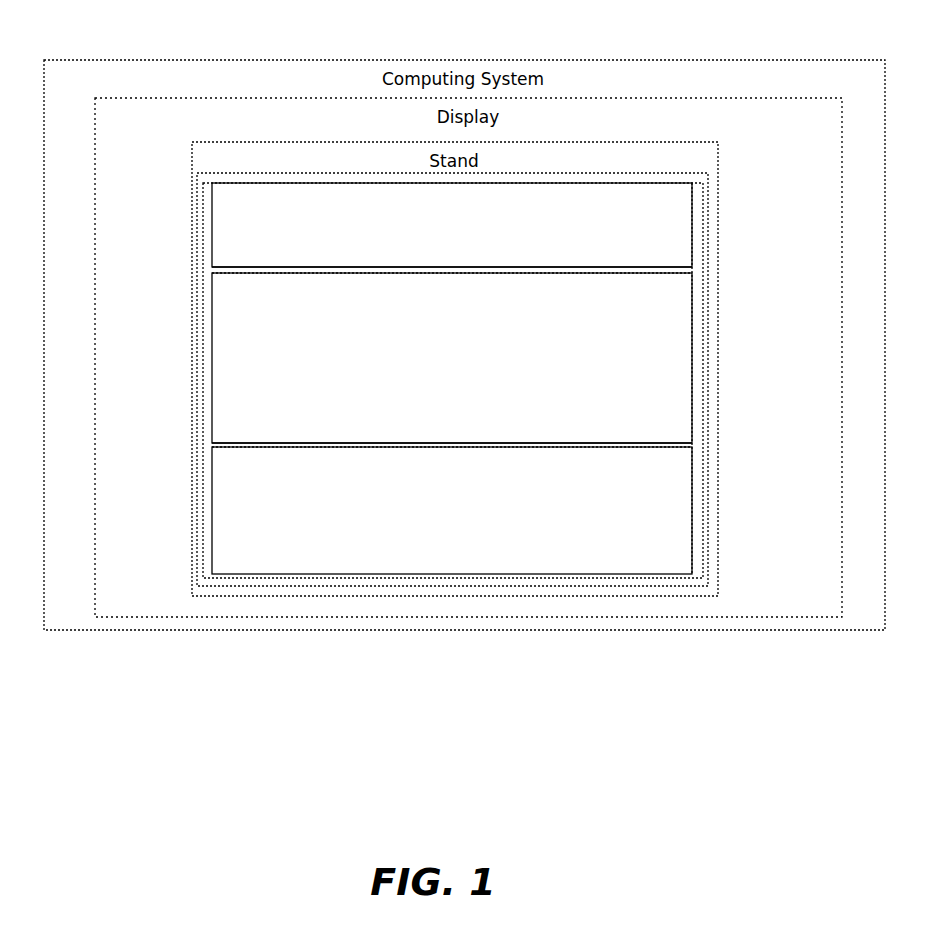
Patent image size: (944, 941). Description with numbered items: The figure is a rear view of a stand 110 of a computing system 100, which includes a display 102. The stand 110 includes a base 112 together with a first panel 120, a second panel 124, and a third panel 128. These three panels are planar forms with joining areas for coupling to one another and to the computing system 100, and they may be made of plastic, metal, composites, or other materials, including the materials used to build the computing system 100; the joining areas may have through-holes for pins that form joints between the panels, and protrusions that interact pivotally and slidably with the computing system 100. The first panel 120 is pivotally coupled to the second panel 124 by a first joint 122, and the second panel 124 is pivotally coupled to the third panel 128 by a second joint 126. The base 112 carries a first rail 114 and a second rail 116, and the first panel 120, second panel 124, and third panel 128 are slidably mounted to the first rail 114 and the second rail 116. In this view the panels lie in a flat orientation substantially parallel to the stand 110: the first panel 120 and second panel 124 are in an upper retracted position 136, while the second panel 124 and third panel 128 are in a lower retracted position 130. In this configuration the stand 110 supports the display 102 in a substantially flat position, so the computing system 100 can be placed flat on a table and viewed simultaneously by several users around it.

The computing system 100 is at (112, 60).
The display 102 is at (127, 98).
The stand 110 is at (197, 141).
The base 112 is at (295, 173).
The first rail 114 is at (207, 232).
The second rail 116 is at (697, 222).
The first panel 120 is at (397, 195).
The first joint 122 is at (298, 268).
The second panel 124 is at (402, 277).
The second joint 126 is at (300, 447).
The third panel 128 is at (403, 453).
The lower retracted position 130 is at (740, 432).
The upper retracted position 136 is at (740, 265).